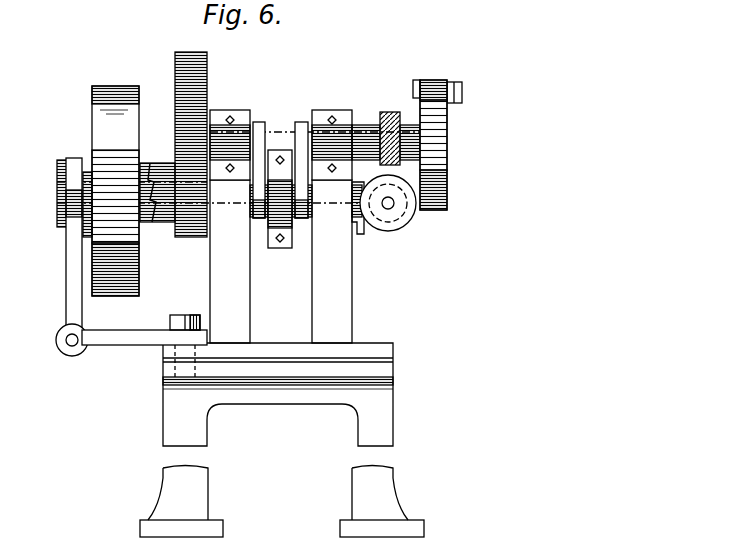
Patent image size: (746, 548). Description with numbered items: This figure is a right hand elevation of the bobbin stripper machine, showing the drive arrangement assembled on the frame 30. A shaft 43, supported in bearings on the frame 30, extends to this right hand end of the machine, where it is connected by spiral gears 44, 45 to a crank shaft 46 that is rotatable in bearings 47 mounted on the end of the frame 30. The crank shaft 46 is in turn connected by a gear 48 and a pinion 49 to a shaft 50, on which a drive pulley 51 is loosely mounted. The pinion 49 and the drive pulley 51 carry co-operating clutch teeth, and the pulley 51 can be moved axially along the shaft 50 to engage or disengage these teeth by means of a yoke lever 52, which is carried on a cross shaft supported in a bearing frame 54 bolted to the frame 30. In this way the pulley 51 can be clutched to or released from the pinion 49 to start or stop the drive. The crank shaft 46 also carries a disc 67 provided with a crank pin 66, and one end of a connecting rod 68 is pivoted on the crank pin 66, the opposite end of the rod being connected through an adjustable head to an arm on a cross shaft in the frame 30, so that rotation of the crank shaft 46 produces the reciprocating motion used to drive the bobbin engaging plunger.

The frame 30 is at (347, 310).
The shaft 43 is at (390, 207).
The spiral gear 44 is at (377, 230).
The spiral gear 45 is at (392, 108).
The crank shaft 46 is at (270, 127).
The bearings 47 is at (213, 117).
The gear 48 is at (180, 52).
The pinion 49 is at (195, 237).
The shaft 50 is at (45, 192).
The drive pulley 51 is at (110, 87).
The yoke lever 52 is at (62, 262).
The bearing frame 54 is at (115, 343).
The crank pin 66 is at (262, 217).
The disc 67 is at (445, 122).
The connecting rod 68 is at (447, 80).